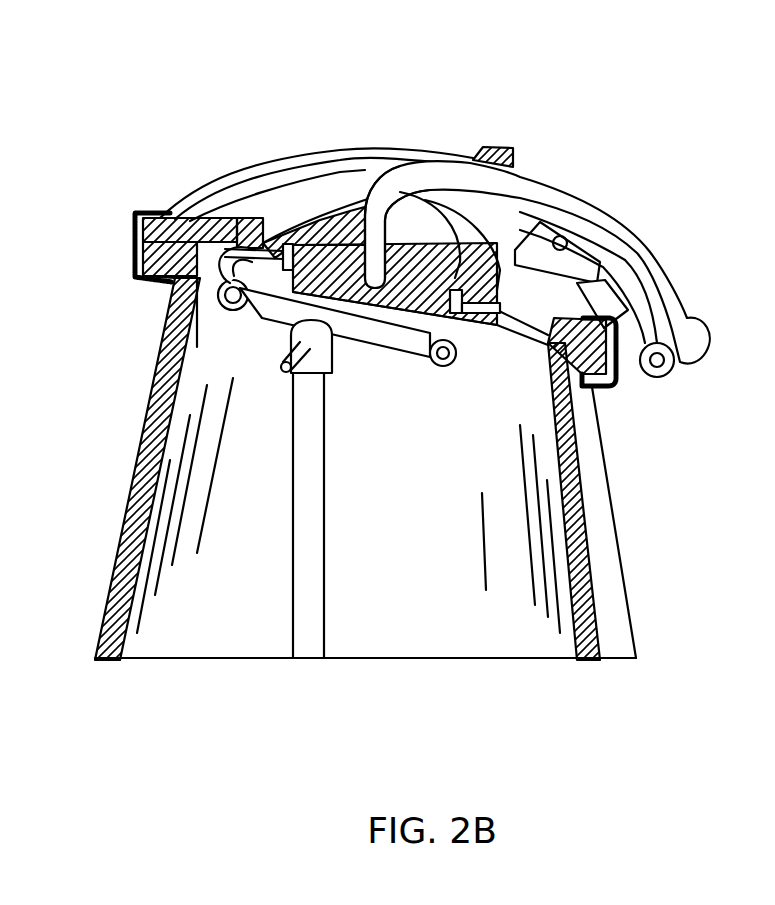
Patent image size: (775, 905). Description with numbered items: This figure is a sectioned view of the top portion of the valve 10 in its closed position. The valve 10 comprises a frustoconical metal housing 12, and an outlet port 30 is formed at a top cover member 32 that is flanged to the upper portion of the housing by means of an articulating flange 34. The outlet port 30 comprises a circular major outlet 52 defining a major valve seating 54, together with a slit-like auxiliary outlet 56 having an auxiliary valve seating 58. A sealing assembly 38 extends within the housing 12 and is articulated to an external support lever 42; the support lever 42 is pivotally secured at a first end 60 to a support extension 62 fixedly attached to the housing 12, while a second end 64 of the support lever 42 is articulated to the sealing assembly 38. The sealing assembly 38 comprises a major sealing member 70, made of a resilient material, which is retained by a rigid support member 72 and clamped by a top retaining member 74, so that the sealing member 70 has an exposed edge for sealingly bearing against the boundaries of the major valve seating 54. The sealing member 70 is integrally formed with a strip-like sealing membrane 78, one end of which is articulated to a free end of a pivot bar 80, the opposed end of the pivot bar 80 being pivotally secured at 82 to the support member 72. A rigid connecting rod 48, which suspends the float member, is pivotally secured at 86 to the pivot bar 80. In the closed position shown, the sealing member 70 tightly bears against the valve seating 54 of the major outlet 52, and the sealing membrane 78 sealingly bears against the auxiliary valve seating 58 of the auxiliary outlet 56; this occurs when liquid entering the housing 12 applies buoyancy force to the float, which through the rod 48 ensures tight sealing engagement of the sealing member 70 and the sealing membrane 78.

The valve 10 is at (128, 515).
The metal housing 12 is at (149, 423).
The outlet port 30 is at (278, 217).
The top cover member 32 is at (197, 212).
The articulating flange 34 is at (133, 248).
The sealing assembly 38 is at (492, 345).
The support lever 42 is at (600, 215).
The connecting rod 48 is at (313, 582).
The major outlet 52 is at (302, 215).
The major valve seating 54 is at (647, 262).
The auxiliary outlet 56 is at (237, 218).
The auxiliary valve seating 58 is at (218, 280).
The first end of the support lever 60 is at (660, 377).
The support extension 62 is at (627, 297).
The second end of the support lever 64 is at (377, 265).
The major sealing member 70 is at (473, 307).
The support member 72 is at (397, 295).
The top retaining member 74 is at (468, 253).
The sealing membrane 78 is at (185, 347).
The pivot bar 80 is at (370, 327).
The pivot 82 is at (430, 365).
The pivot 86 is at (288, 364).